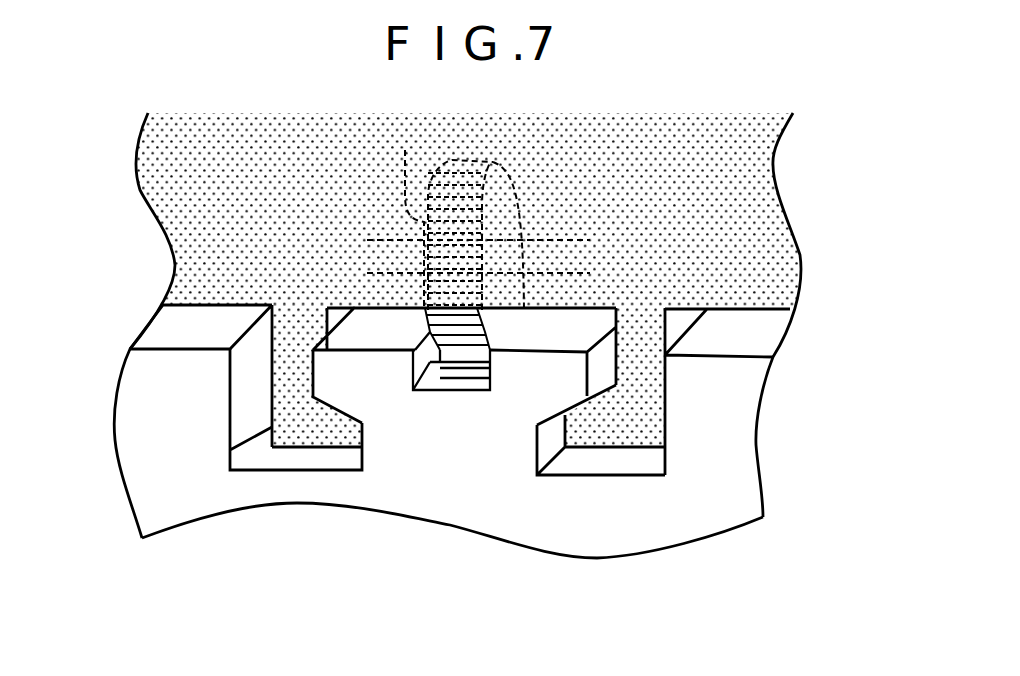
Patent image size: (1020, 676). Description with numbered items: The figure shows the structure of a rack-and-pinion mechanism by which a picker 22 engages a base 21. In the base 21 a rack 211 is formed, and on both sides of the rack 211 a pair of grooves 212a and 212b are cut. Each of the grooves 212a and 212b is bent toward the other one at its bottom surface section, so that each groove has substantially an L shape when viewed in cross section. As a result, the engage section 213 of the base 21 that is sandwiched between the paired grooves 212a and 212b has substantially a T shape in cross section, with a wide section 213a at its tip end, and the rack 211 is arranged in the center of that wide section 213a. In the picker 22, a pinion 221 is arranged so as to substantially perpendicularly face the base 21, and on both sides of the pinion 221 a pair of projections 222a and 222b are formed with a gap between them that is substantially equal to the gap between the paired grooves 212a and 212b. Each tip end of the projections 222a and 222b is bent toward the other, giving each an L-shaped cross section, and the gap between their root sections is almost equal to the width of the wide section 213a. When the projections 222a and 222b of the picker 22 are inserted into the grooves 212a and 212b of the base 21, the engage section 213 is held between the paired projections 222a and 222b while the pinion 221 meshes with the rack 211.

The base 21 is at (648, 530).
The rack 211 is at (440, 377).
The groove 212a is at (262, 462).
The groove 212b is at (578, 472).
The engage section 213 is at (472, 492).
The wide section 213a is at (347, 405).
The picker 22 is at (755, 170).
The pinion 221 is at (405, 152).
The projection 222a is at (282, 352).
The projection 222b is at (643, 403).